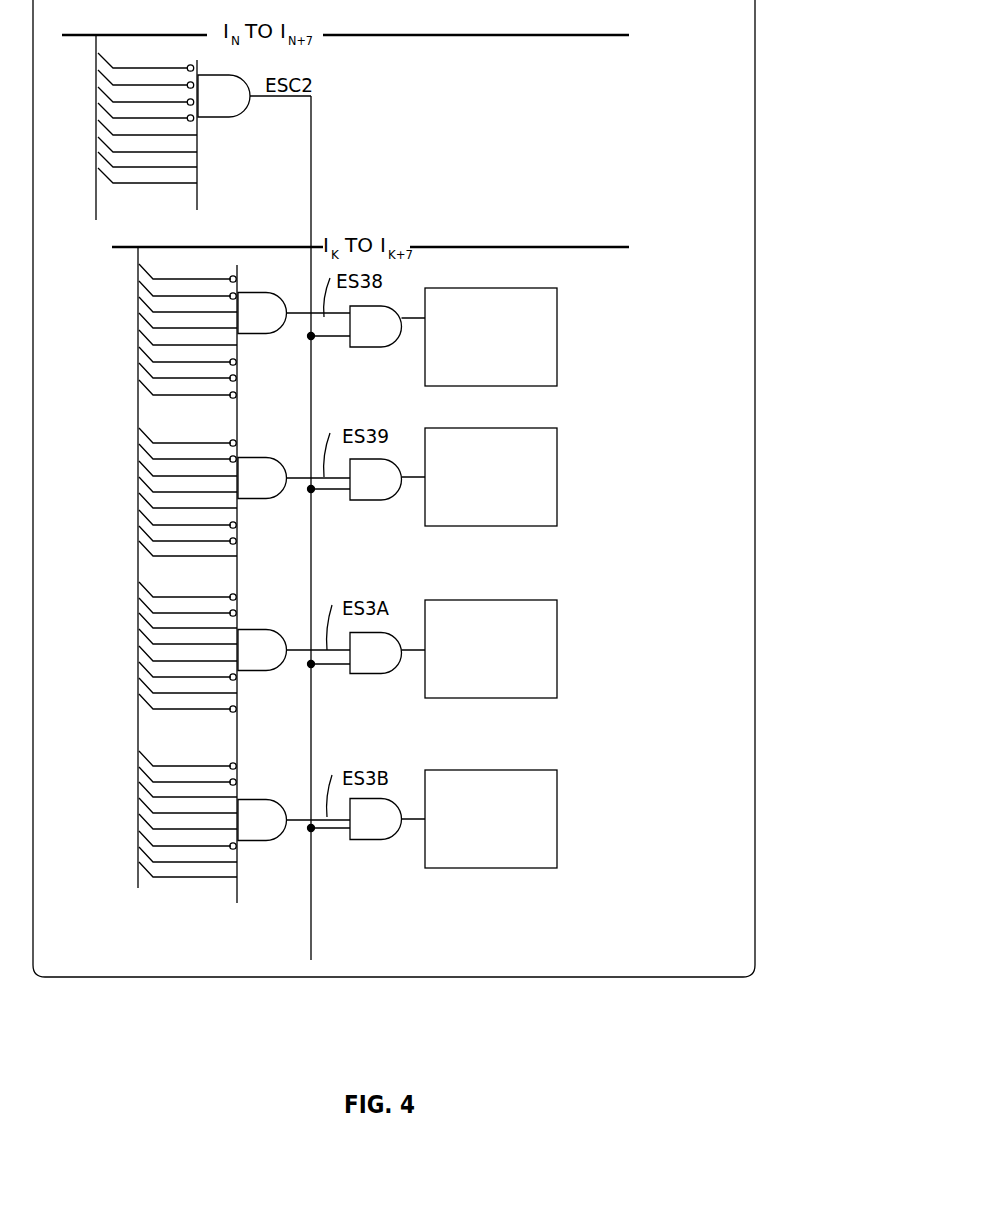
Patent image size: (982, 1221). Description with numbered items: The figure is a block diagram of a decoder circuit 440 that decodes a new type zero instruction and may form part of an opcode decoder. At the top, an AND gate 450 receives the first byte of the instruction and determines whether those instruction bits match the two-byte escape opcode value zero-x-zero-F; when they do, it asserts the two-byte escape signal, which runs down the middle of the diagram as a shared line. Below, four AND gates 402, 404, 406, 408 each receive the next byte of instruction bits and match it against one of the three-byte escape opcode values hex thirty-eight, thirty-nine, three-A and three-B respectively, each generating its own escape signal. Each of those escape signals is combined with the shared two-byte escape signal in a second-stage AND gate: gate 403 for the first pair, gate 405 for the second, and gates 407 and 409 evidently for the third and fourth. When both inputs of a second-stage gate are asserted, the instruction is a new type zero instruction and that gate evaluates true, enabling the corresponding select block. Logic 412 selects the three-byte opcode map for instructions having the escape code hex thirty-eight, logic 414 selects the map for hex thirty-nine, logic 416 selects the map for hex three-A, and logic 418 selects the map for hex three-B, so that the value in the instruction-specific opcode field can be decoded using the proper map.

The decoder circuit 440 is at (752, 134).
The AND gate 450 is at (240, 105).
The AND gate 402 is at (281, 321).
The AND gate 403 is at (394, 335).
The AND gate 404 is at (281, 486).
The AND gate 405 is at (394, 488).
The AND gate 406 is at (281, 658).
The AND gate combining ESC2 with decode for ES3A 407 is at (394, 662).
The AND gate 408 is at (281, 828).
The AND gate combining ESC2 with decode for ES3B 409 is at (394, 828).
The logic 412 is at (557, 337).
The logic 414 is at (557, 474).
The logic 416 is at (557, 653).
The logic 418 is at (557, 823).